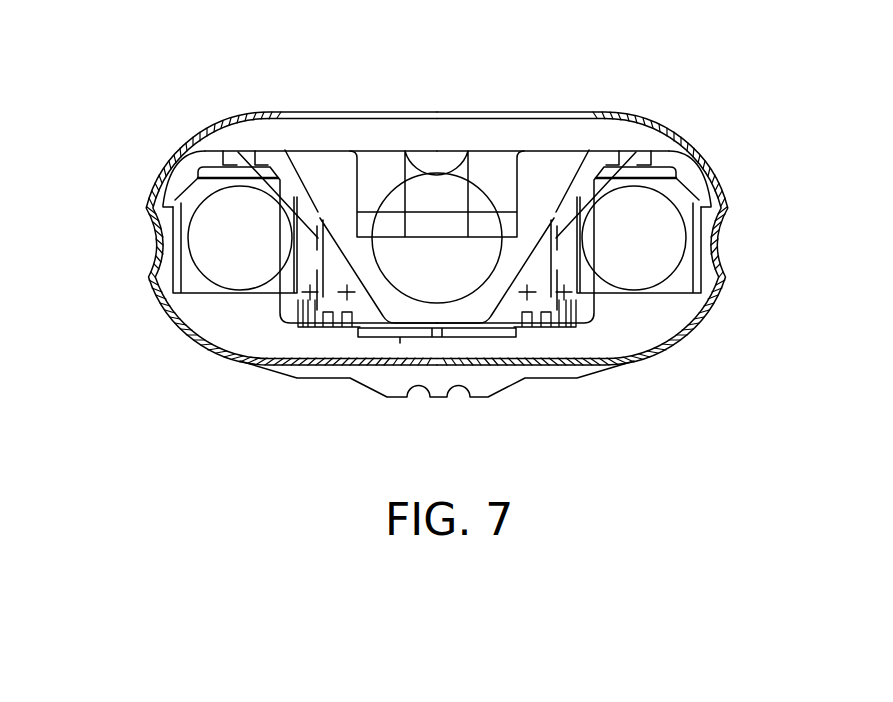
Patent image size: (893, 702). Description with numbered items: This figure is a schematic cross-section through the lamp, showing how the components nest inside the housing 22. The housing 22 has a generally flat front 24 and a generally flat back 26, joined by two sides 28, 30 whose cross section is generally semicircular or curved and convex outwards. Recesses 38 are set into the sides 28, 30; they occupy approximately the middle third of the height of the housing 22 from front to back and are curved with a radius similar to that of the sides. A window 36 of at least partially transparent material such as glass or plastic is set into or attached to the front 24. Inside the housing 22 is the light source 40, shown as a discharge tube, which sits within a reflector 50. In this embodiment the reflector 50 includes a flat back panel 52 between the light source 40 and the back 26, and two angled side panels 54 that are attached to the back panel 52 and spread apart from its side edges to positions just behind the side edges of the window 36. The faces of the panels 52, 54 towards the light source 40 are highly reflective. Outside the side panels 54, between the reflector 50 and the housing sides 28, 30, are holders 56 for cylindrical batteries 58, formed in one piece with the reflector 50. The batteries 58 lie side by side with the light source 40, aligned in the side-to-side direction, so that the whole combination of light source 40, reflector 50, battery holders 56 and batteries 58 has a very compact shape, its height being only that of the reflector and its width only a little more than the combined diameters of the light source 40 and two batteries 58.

The housing 22 is at (235, 213).
The front 24 is at (627, 202).
The back 26 is at (633, 365).
The side 28 is at (722, 238).
The side 30 is at (148, 275).
The window 36 is at (455, 150).
The recess 38 is at (235, 238).
The light source 40 is at (390, 185).
The reflector 50 is at (310, 150).
The flat back panel 52 is at (400, 337).
The angled side panel 54 is at (557, 190).
The battery holder 56 is at (185, 272).
The battery 58 is at (243, 266).